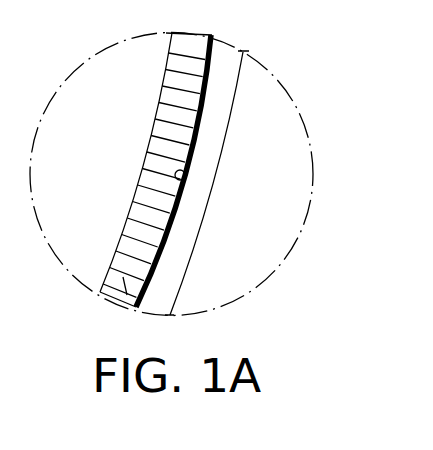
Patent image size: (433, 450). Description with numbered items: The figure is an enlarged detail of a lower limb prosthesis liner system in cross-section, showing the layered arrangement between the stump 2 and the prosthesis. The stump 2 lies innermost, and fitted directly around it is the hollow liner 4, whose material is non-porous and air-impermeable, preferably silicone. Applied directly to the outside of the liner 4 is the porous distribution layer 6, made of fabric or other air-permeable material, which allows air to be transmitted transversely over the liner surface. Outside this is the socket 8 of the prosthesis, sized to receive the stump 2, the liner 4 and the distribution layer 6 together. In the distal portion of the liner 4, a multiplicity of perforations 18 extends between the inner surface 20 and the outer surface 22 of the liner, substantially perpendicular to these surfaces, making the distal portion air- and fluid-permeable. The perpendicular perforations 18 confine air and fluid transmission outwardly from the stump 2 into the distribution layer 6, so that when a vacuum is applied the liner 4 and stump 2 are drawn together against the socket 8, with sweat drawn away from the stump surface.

The stump 2 is at (99, 156).
The liner 4 is at (163, 110).
The distribution layer 6 is at (200, 123).
The socket 8 is at (197, 237).
The perforations 18 is at (114, 292).
The inner surface 20 is at (133, 215).
The outer surface 22 is at (187, 170).